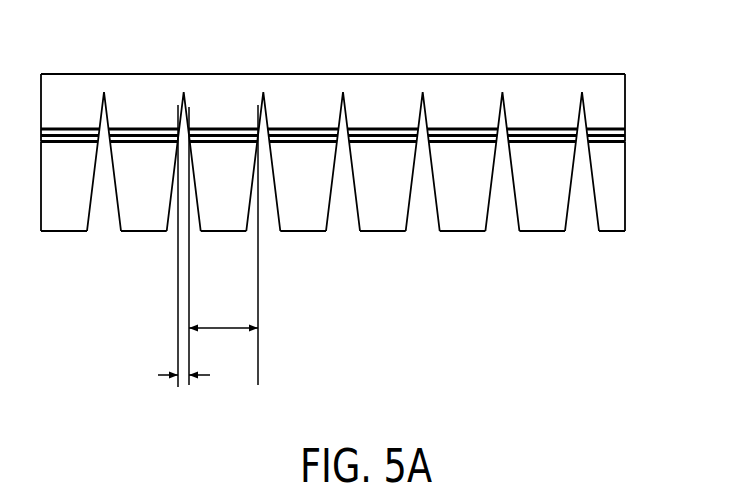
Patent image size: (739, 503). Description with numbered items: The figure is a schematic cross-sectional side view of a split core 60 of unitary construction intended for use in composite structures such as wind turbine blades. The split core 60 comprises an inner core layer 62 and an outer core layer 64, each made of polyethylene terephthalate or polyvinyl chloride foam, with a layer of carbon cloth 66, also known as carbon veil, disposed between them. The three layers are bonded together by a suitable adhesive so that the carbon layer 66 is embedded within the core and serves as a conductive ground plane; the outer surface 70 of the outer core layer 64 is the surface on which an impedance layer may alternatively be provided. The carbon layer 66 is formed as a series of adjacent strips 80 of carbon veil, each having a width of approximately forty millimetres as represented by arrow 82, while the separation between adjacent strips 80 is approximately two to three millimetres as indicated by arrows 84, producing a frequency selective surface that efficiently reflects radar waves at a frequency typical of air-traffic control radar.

The split core 60 is at (97, 263).
The inner core layer 62 is at (615, 187).
The outer core layer 64 is at (357, 71).
The layer of carbon cloth 66 is at (627, 137).
The outer surface 70 is at (75, 73).
The strips 80 is at (304, 133).
The arrow 82 is at (225, 330).
The arrows 84 is at (185, 375).